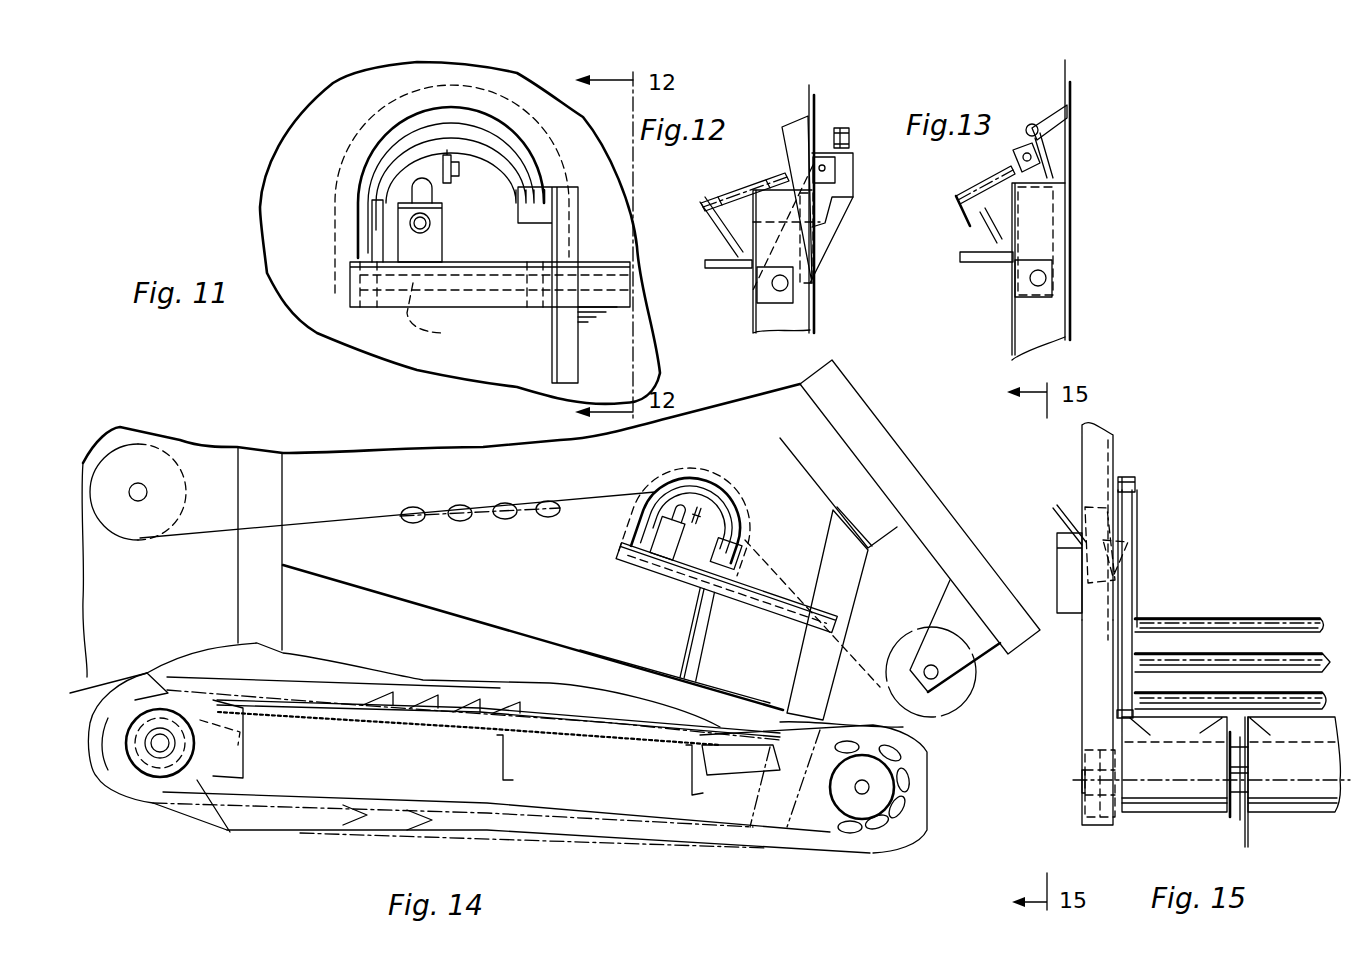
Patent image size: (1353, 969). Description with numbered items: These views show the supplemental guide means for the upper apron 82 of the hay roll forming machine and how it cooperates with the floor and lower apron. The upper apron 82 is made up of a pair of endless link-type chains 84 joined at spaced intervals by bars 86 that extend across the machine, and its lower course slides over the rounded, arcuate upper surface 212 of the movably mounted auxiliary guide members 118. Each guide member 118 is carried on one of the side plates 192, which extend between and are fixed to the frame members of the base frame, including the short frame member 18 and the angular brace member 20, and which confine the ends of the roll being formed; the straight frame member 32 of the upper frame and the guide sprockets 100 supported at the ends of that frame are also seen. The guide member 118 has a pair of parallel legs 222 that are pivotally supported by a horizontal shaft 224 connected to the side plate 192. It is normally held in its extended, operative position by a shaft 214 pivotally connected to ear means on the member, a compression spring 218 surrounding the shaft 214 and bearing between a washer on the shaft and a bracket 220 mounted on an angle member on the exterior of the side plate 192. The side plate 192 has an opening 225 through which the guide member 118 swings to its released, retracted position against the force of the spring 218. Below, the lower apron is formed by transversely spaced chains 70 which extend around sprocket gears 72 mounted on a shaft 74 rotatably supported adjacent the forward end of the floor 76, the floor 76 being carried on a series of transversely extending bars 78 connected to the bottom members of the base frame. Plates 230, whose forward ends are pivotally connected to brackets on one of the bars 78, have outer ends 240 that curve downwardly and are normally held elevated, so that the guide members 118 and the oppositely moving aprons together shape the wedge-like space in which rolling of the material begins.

In FIG. 11, the side plates 192 is at (268, 210).
In FIG. 12, the side plates 192 is at (815, 310).
In FIG. 13, the side plates 192 is at (1075, 90).
In FIG. 14, the side plates 192 is at (435, 555).
In FIG. 11, the opening 225 is at (477, 133).
In FIG. 12, the opening 225 is at (812, 104).
In FIG. 13, the opening 225 is at (1075, 120).
In FIG. 11, the rounded, arcuate upper surface 212 is at (490, 157).
In FIG. 12, the rounded, arcuate upper surface 212 is at (846, 150).
In FIG. 13, the rounded, arcuate upper surface 212 is at (1036, 122).
In FIG. 14, the rounded, arcuate upper surface 212 is at (668, 484).
In FIG. 11, the shaft 214 is at (443, 170).
In FIG. 12, the shaft 214 is at (797, 160).
In FIG. 13, the shaft 214 is at (1007, 150).
In FIG. 14, the shaft 214 is at (696, 516).
In FIG. 11, the compression spring 218 is at (437, 191).
In FIG. 12, the compression spring 218 is at (746, 192).
In FIG. 13, the compression spring 218 is at (988, 188).
In FIG. 14, the compression spring 218 is at (679, 513).
In FIG. 11, the auxiliary guide members 118 is at (490, 285).
In FIG. 12, the auxiliary guide members 118 is at (853, 200).
In FIG. 13, the auxiliary guide members 118 is at (1075, 148).
In FIG. 14, the auxiliary guide members 118 is at (706, 531).
In FIG. 15, the auxiliary guide members 118 is at (1130, 503).
In FIG. 11, the bracket 220 is at (438, 242).
In FIG. 12, the bracket 220 is at (726, 238).
In FIG. 13, the bracket 220 is at (988, 248).
In FIG. 14, the bracket 220 is at (668, 556).
In FIG. 15, the bracket 220 is at (1056, 511).
In FIG. 12, the parallel legs 222 is at (830, 235).
In FIG. 13, the parallel legs 222 is at (1000, 270).
In FIG. 11, the horizontal shaft 224 is at (450, 315).
In FIG. 12, the horizontal shaft 224 is at (760, 300).
In FIG. 13, the horizontal shaft 224 is at (1046, 282).
In FIG. 12, the chains 84 is at (845, 126).
In FIG. 15, the chains 84 is at (1135, 479).
In FIG. 14, the upper apron 82 is at (412, 507).
In FIG. 14, the angular brace member 20 is at (787, 435).
In FIG. 14, the straight frame member 32 is at (888, 451).
In FIG. 15, the straight frame member 32 is at (1086, 442).
In FIG. 14, the short frame member 18 is at (843, 600).
In FIG. 15, the short frame member 18 is at (1092, 742).
In FIG. 14, the guide sprockets 100 is at (972, 672).
In FIG. 15, the guide sprockets 100 is at (1130, 690).
In FIG. 14, the bottom or floor 76 is at (573, 715).
In FIG. 14, the plates 230 is at (748, 740).
In FIG. 14, the outer ends 240 is at (917, 738).
In FIG. 15, the outer ends 240 is at (1187, 732).
In FIG. 14, the sprocket gears 72 is at (126, 743).
In FIG. 15, the sprocket gears 72 is at (1238, 813).
In FIG. 14, the chains 70 is at (122, 785).
In FIG. 15, the chains 70 is at (1233, 818).
In FIG. 14, the shaft 74 is at (160, 757).
In FIG. 15, the shaft 74 is at (1100, 813).
In FIG. 14, the transversely extending bars 78 is at (250, 765).
In FIG. 15, the bars 86 is at (1245, 657).